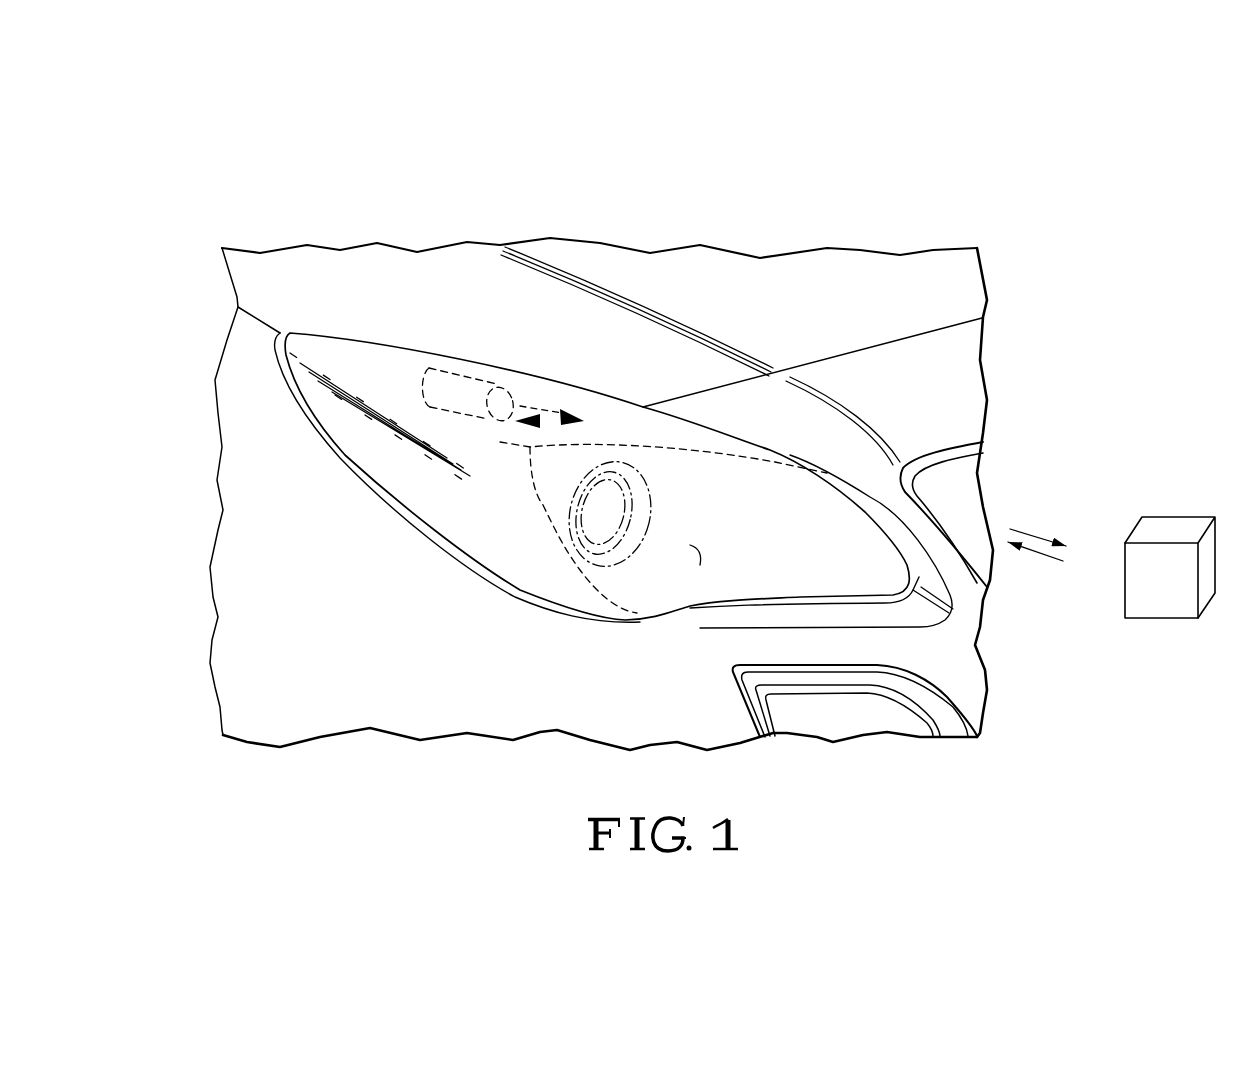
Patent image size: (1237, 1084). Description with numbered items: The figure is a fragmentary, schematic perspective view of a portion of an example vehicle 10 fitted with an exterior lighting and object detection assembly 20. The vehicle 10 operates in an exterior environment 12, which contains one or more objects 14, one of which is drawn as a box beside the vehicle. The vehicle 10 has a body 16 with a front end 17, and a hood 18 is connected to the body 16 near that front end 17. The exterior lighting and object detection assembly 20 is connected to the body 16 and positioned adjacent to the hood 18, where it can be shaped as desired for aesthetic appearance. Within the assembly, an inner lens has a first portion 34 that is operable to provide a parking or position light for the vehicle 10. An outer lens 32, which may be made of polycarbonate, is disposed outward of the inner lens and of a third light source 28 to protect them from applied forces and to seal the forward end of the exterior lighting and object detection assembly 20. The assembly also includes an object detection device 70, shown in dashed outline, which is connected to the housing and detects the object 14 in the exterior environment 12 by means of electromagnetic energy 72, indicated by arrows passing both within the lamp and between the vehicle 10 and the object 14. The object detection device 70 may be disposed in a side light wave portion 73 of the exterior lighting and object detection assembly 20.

The vehicle 10 is at (515, 174).
The exterior environment 12 is at (1050, 414).
The object 14 is at (1177, 594).
The body 16 is at (316, 296).
The front end 17 is at (1010, 689).
The hood 18 is at (785, 311).
The exterior lighting and object detection assembly 20 is at (262, 474).
The third light source 28 is at (602, 512).
The outer lens 32 is at (700, 565).
The first portion 34 is at (466, 498).
The object detection device 70 is at (458, 395).
The electromagnetic energy 72 is at (500, 442).
The side light wave portion 73 is at (450, 423).